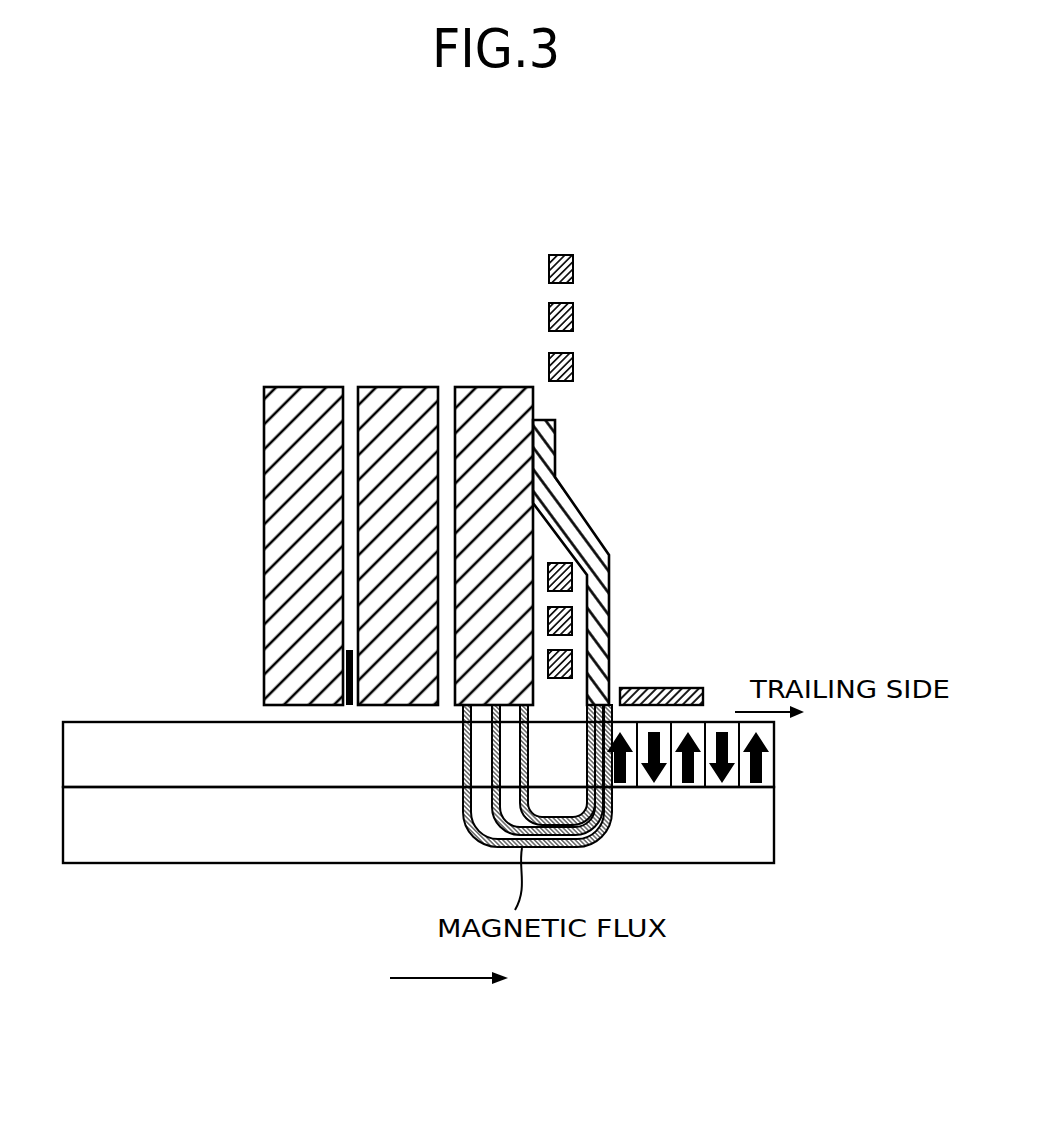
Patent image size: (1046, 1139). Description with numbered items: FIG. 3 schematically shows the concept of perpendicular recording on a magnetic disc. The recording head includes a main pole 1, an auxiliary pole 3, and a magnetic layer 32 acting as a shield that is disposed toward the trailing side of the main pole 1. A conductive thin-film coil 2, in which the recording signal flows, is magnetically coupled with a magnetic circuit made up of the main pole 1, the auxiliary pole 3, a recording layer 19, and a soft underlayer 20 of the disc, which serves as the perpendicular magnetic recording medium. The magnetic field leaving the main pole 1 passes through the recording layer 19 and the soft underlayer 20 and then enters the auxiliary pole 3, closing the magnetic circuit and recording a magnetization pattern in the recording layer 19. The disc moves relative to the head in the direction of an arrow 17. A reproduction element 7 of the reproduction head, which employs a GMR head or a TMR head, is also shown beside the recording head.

The main pole 1 is at (610, 597).
The conductive thin-film coil 2 is at (573, 321).
The auxiliary pole 3 is at (505, 387).
The reproduction element 7 is at (345, 677).
The arrow 17 is at (449, 997).
The recording layer 19 is at (158, 722).
The soft underlayer 20 is at (158, 863).
The magnetic layer (shield) 32 is at (683, 688).